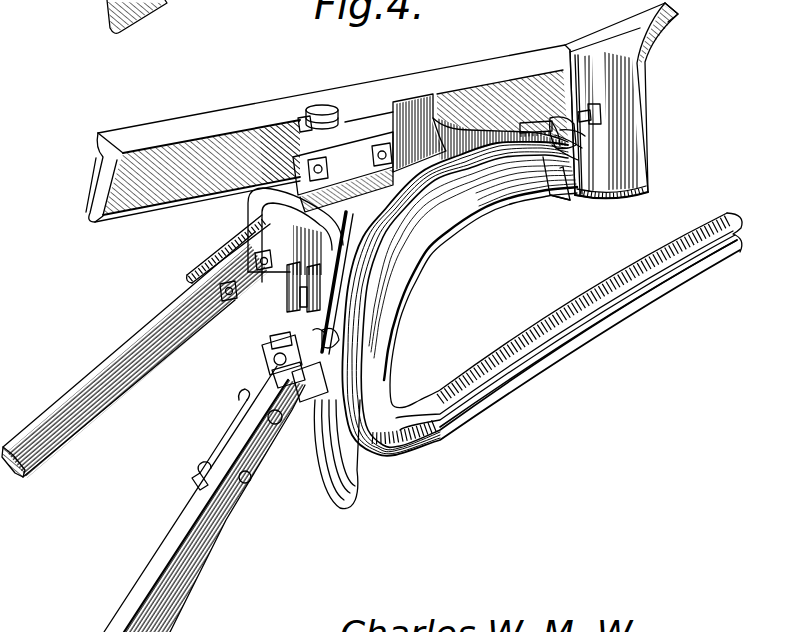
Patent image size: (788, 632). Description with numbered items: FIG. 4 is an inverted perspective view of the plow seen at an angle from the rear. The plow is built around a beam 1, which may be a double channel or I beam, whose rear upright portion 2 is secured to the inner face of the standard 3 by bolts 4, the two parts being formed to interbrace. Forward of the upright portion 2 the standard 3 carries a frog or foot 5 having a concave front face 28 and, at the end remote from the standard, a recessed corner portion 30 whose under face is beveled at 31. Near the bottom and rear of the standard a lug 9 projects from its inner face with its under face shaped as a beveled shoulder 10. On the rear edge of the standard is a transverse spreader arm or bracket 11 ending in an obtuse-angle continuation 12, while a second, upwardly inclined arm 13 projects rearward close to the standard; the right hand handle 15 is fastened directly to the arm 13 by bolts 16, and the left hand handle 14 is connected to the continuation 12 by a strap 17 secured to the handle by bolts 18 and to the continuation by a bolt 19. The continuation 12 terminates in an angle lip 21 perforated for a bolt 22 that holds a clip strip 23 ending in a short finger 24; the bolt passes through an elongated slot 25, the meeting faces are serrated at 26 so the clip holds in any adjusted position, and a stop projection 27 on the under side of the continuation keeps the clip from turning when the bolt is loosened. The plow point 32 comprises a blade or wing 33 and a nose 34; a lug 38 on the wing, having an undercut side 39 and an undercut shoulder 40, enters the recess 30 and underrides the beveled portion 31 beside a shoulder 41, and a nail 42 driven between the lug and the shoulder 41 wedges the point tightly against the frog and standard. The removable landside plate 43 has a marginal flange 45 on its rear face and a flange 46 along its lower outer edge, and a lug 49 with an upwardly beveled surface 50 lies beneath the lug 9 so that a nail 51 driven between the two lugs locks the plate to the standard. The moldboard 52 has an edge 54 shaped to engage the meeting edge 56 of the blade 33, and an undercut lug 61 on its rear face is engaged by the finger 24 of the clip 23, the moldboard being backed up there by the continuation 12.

The beam 1 is at (582, 346).
The rear upright portion 2 is at (346, 190).
The standard 3 is at (407, 113).
The bolts 4 is at (372, 153).
The frog or foot 5 is at (564, 103).
The lug 9 is at (369, 124).
The beveled shoulder 10 is at (306, 133).
The spreader arm or bracket 11 is at (295, 235).
The obtuse-angle continuation 12 is at (318, 270).
The arm or continuation 13 is at (218, 253).
The left hand plow handle 14 is at (192, 558).
The right hand plow handle 15 is at (93, 374).
The bolts 16 is at (246, 292).
The strap 17 is at (195, 480).
The bolts 18 is at (207, 452).
The bolt 19 is at (292, 302).
The angle lip 21 is at (300, 326).
The bolt 22 is at (280, 368).
The clip strip 23 is at (270, 342).
The short finger 24 is at (324, 380).
The elongated slot 25 is at (273, 360).
The serrations 26 is at (282, 352).
The stop projection 27 is at (320, 333).
The concave front face 28 is at (577, 92).
The recessed corner portion 30 is at (573, 128).
The beveled under face 31 is at (553, 192).
The plow point 32 is at (647, 63).
The blade or wing 33 is at (649, 170).
The nose 34 is at (677, 12).
The lug 38 is at (582, 148).
The beveled or undercut side 39 is at (585, 138).
The beveled or undercut shoulder 40 is at (577, 160).
The shoulder 41 is at (586, 118).
The nail 42 is at (601, 112).
The landside plate 43 is at (160, 210).
The marginal rib or flange 45 is at (113, 224).
The flange 46 is at (107, 135).
The lug 49 is at (330, 108).
The beveled upper surface 50 is at (342, 116).
The nail 51 is at (303, 115).
The moldboard 52 is at (453, 243).
The edge 54 is at (566, 201).
The meeting edge 56 is at (582, 201).
The undercut lug 61 is at (338, 338).